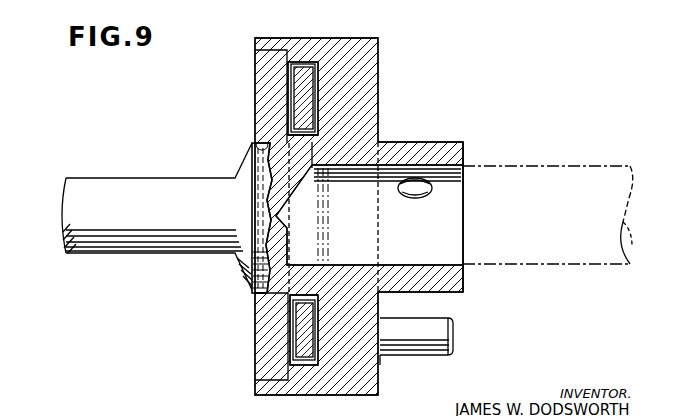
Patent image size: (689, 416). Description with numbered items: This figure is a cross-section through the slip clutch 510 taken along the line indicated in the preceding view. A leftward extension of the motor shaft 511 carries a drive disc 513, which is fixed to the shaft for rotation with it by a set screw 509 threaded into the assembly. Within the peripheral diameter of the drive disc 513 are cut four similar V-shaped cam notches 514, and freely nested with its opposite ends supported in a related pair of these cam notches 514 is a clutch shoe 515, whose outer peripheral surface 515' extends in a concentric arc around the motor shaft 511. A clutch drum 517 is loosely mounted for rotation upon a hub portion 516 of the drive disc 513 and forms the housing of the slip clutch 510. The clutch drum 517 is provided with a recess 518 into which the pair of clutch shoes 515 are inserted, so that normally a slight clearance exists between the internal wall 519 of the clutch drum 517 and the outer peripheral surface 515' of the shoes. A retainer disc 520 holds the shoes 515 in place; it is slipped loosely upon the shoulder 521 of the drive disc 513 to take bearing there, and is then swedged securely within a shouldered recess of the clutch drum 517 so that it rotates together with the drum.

The set screw 509 is at (436, 330).
The slip clutch 510 is at (381, 96).
The motor shaft 511 is at (505, 172).
The drive disc 513 is at (290, 297).
The cam notches 514 is at (300, 135).
The clutch shoe 515 is at (259, 207).
The outer peripheral surface 515' is at (404, 367).
The hub portion 516 is at (430, 128).
The clutch drum 517 is at (368, 66).
The recess 518 is at (300, 62).
The internal wall 519 is at (300, 366).
The retainer disc 520 is at (268, 99).
The shoulder 521 is at (256, 150).